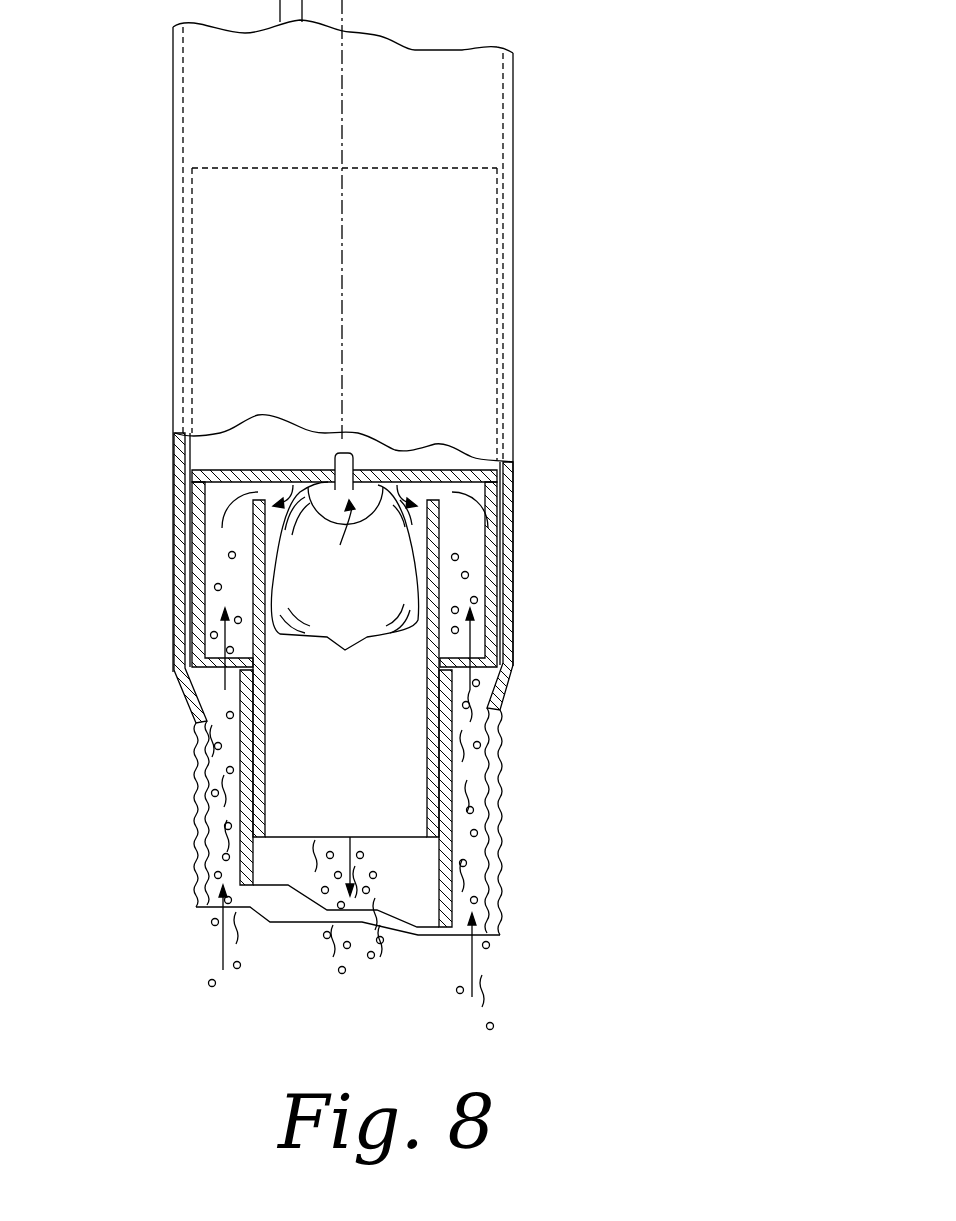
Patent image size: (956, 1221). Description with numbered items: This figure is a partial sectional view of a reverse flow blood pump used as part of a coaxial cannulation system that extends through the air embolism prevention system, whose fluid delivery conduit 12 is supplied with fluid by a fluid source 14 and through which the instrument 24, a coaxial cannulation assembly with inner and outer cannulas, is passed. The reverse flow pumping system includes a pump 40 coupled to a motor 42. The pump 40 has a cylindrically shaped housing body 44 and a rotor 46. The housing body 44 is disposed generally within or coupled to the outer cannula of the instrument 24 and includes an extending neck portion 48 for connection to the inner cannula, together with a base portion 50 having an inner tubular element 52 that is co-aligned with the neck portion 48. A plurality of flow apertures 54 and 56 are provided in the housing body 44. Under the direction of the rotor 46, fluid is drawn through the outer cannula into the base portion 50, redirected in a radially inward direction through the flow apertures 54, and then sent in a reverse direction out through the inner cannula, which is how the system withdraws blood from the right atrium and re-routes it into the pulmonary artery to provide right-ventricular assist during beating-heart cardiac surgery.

The fluid delivery conduit 12 is at (517, 493).
The fluid source 14 is at (574, 334).
The instrument 24 is at (440, 885).
The pump 40 is at (232, 472).
The motor 42 is at (422, 168).
The housing body 44 is at (190, 592).
The rotor 46 is at (330, 628).
The neck portion 48 is at (455, 823).
The base portion 50 is at (497, 528).
The inner tubular element 52 is at (442, 602).
The flow apertures 54 is at (287, 478).
The flow apertures 56 is at (197, 682).